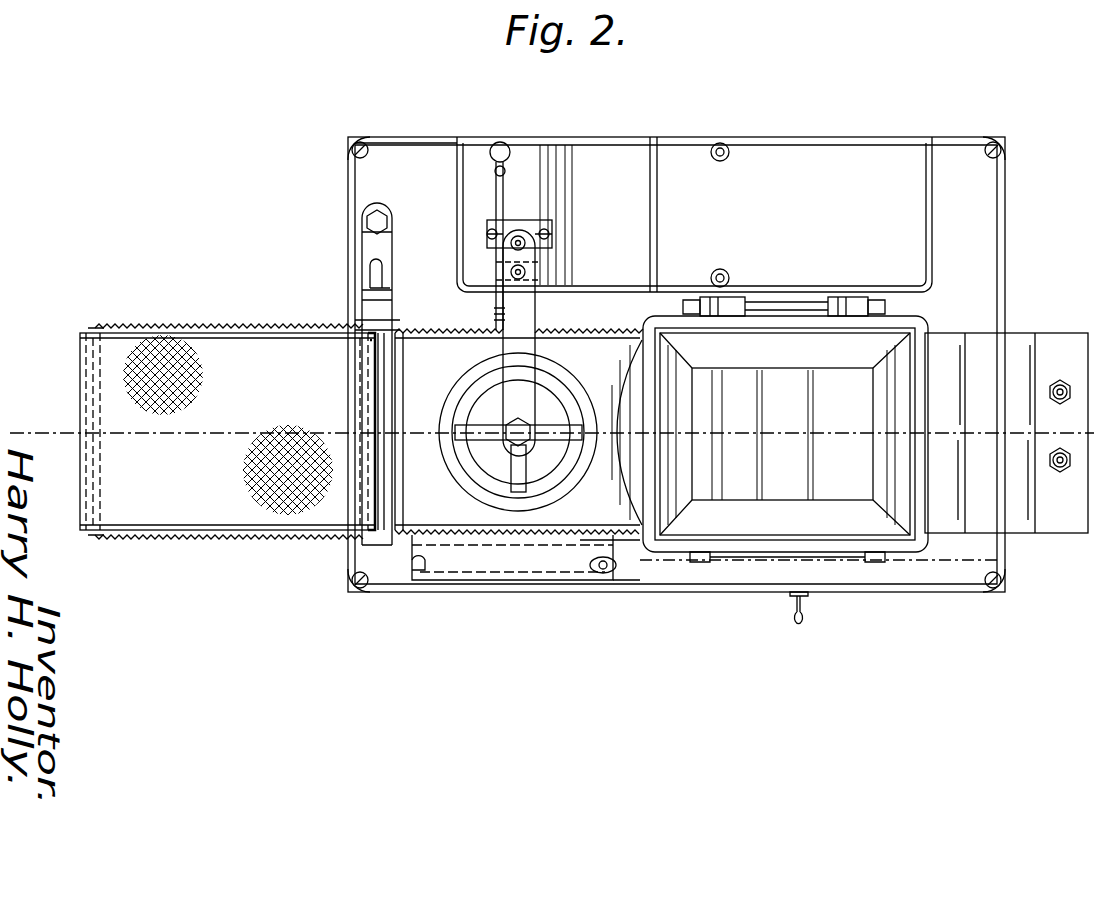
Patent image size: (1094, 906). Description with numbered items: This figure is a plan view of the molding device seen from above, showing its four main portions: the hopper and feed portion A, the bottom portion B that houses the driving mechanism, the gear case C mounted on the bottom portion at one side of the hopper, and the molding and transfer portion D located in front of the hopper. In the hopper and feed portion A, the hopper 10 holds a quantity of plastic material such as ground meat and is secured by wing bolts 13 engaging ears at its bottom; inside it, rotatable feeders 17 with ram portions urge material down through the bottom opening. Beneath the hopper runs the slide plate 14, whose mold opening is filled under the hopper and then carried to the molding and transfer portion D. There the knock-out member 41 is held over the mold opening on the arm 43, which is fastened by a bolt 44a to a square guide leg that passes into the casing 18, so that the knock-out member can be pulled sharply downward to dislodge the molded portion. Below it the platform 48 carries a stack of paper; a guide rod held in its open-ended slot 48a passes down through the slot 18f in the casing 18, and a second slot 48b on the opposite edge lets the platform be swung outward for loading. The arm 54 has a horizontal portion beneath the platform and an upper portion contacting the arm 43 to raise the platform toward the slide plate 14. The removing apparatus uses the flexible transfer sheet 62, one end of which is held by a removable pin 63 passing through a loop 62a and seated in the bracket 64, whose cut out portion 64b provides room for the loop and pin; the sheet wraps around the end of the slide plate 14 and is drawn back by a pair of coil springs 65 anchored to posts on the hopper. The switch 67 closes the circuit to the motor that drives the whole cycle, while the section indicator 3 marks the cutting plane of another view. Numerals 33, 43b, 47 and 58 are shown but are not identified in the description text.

The section line 3 is at (48, 433).
The hopper 10 is at (925, 322).
The wing bolts 13 is at (882, 562).
The slide plate 14 is at (582, 510).
The feeder 17 is at (830, 450).
The casing 18 is at (935, 555).
The slot in casing 18f is at (615, 566).
The cover 33 is at (860, 152).
The knock-out member 41 is at (555, 408).
The arm 43 is at (512, 344).
The lever arm slot 43b is at (532, 262).
The bolt 44a is at (527, 274).
The bracket 47 is at (549, 220).
The platform 48 is at (497, 563).
The open-ended slot 48a is at (596, 572).
The second slot 48b is at (412, 565).
The arm 54 is at (493, 318).
The screw 58 is at (603, 574).
The flexible transfer sheet 62 is at (240, 352).
The loop 62a is at (368, 372).
The removable pin 63 is at (358, 280).
The bracket 64 is at (390, 320).
The cut out portion 64b is at (388, 470).
The coil springs 65 is at (300, 538).
The switch 67 is at (803, 600).
The hopper and feed portion A is at (905, 475).
The bottom portion B is at (1017, 216).
The gear case C is at (779, 223).
The molding and transfer portion D is at (465, 402).